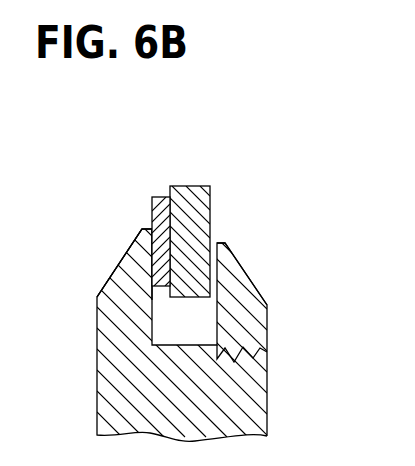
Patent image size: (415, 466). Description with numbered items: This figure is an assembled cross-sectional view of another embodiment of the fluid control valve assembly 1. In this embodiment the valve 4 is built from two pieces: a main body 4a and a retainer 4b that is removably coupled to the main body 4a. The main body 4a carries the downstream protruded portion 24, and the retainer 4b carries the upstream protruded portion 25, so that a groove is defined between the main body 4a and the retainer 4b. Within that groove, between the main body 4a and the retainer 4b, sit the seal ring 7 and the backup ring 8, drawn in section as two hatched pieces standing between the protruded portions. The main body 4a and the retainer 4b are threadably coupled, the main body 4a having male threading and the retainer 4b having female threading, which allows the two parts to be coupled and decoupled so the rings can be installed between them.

The valve assembly 1 is at (288, 172).
The valve 4 is at (268, 397).
The main body 4a is at (109, 313).
The retainer 4b is at (237, 285).
The seal ring 7 is at (192, 186).
The backup ring 8 is at (157, 197).
The downstream protruded portion 24 is at (127, 287).
The upstream protruded portion 25 is at (252, 316).